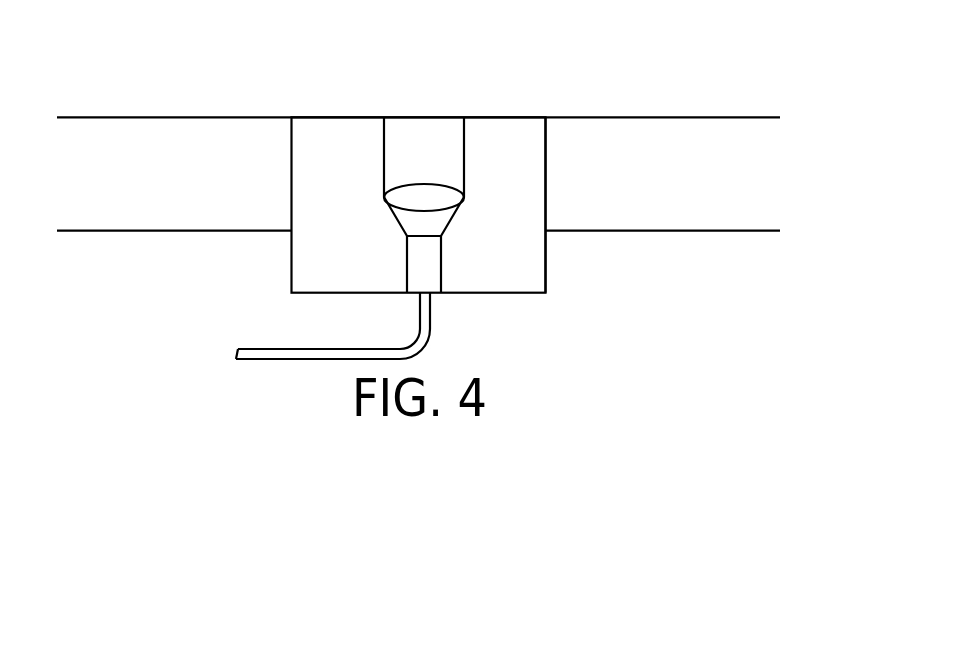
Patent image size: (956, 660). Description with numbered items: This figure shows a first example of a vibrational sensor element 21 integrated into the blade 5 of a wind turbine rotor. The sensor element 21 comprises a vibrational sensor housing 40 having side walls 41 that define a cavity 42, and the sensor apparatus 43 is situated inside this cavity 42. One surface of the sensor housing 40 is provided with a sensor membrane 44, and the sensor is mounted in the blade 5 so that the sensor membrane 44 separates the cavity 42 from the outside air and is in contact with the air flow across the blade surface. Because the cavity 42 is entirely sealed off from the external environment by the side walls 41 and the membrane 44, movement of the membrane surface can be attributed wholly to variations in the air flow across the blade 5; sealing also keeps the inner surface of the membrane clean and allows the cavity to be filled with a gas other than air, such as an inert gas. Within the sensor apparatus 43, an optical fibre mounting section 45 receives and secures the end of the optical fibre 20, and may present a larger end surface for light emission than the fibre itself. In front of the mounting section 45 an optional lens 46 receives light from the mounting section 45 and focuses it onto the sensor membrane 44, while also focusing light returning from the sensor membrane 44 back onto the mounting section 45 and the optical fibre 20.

The blade 5 is at (731, 127).
The optical fibre 20 is at (432, 318).
The vibrational sensor element 21 is at (288, 68).
The vibrational sensor housing 40 is at (293, 298).
The side walls 41 is at (546, 277).
The cavity 42 is at (506, 219).
The sensor apparatus 43 is at (418, 175).
The sensor membrane 44 is at (523, 117).
The optical fibre mounting section 45 is at (432, 263).
The lens 46 is at (395, 210).